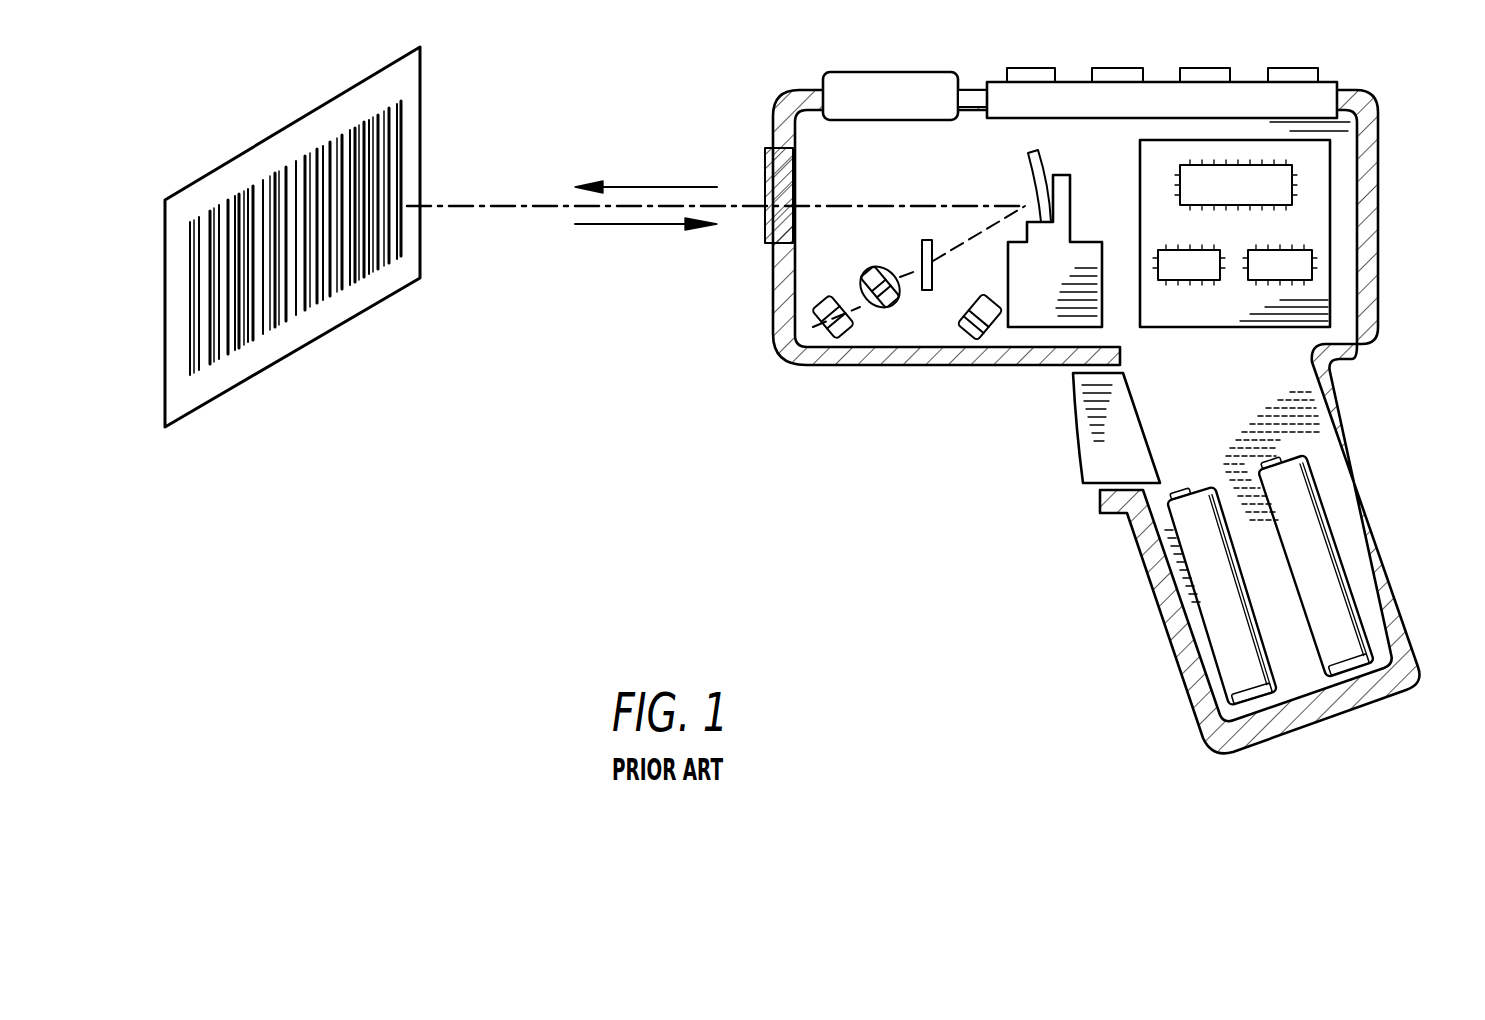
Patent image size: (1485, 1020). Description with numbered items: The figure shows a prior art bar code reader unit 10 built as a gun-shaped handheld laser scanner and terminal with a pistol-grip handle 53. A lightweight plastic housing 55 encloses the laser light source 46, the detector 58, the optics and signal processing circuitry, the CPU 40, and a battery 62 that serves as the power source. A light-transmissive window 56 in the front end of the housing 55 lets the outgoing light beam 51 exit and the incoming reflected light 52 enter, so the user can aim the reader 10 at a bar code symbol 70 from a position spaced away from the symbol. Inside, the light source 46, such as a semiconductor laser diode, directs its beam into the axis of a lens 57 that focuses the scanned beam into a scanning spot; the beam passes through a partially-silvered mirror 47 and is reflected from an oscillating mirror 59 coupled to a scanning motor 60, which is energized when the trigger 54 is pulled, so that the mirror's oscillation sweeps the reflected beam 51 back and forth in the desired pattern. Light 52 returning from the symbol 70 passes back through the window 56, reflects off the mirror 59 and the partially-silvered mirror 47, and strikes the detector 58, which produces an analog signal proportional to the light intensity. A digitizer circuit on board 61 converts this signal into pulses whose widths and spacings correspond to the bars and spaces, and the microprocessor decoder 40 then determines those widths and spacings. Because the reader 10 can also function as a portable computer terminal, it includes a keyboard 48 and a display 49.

The bar code reader unit 10 is at (820, 546).
The CPU 40 is at (1208, 183).
The laser light source 46 is at (840, 333).
The partially-silvered mirror 47 is at (925, 240).
The keyboard 48 is at (1254, 82).
The display 49 is at (888, 72).
The outgoing light beam 51 is at (637, 187).
The incoming reflected light 52 is at (598, 228).
The handle 53 is at (1172, 612).
The trigger 54 is at (1113, 448).
The housing 55 is at (1376, 313).
The light-transmissive window 56 is at (762, 158).
The lens 57 is at (895, 333).
The detector 58 is at (957, 336).
The oscillating mirror 59 is at (1040, 162).
The scanning motor 60 is at (1027, 330).
The board 61 is at (1347, 204).
The battery 62 is at (1328, 646).
The bar code symbol 70 is at (398, 146).